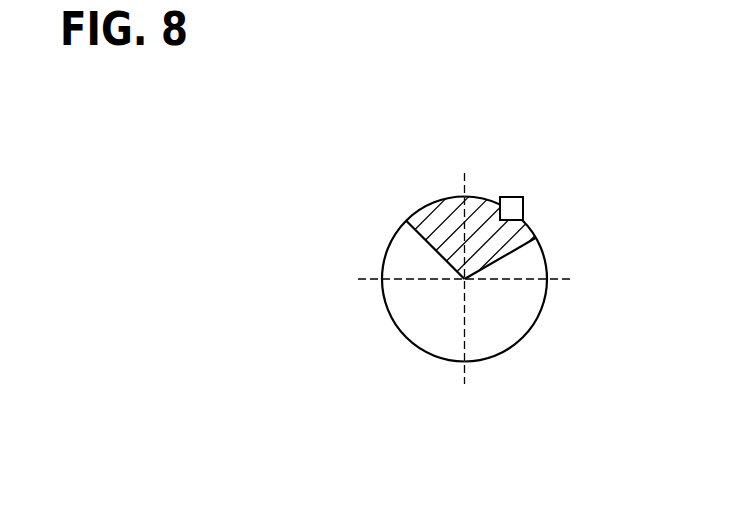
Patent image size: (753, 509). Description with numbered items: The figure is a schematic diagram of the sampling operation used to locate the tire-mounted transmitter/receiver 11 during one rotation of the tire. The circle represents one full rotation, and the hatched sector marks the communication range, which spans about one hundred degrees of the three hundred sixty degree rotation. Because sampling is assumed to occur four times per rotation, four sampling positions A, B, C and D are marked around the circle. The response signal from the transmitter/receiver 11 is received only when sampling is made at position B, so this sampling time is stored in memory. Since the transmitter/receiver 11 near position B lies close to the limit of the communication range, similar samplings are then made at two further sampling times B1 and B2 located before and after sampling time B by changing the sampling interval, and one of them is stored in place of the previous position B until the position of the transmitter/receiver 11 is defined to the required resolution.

The transmitter/receiver 11 is at (522, 195).
The sampling position A is at (382, 236).
The sampling position B is at (530, 212).
The sampling time B1 is at (501, 188).
The sampling time B2 is at (555, 243).
The sampling position C is at (540, 335).
The sampling position D is at (402, 352).